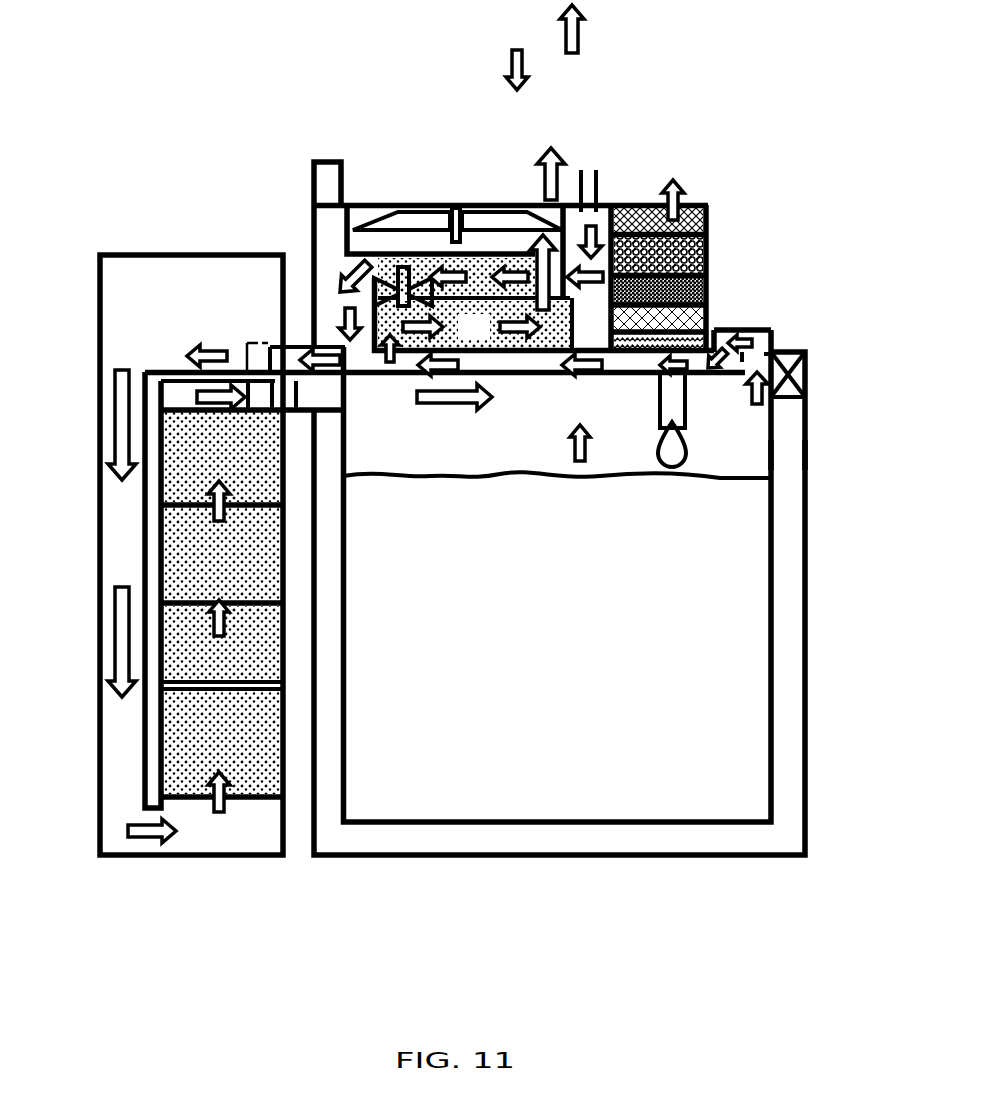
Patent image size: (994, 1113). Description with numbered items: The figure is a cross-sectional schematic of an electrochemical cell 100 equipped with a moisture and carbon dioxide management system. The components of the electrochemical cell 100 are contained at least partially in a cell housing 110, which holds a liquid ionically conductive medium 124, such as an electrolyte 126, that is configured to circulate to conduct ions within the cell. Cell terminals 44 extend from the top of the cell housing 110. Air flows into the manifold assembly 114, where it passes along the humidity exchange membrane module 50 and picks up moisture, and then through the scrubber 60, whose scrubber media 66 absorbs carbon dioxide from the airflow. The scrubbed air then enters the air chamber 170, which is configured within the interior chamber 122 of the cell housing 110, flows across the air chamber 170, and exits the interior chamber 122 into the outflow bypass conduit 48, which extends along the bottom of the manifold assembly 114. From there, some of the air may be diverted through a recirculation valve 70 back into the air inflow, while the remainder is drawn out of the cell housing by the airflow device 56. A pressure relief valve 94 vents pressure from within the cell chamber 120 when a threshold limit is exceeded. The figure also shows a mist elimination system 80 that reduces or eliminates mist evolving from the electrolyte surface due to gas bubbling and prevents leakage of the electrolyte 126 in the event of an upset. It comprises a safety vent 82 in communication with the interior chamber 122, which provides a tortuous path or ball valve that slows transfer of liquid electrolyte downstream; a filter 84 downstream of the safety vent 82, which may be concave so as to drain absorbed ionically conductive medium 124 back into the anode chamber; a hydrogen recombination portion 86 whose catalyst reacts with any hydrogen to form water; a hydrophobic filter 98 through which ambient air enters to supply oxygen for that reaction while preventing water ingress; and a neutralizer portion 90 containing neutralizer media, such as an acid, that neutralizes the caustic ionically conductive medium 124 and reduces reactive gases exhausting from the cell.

The electrochemical cell 100 is at (228, 148).
The scrubber 60 is at (107, 248).
The scrubber media 66 is at (229, 463).
The cell terminals 44 is at (326, 186).
The manifold assembly 114 is at (464, 196).
The recirculation valve 70 is at (404, 267).
The airflow device 56 is at (517, 205).
The humidity exchange membrane module 50 is at (485, 338).
The mist elimination system 80 is at (716, 178).
The hydrophobic filter 98 is at (646, 205).
The neutralizer portion 90 is at (708, 253).
The hydrogen recombination portion 86 is at (708, 279).
The filter 84 is at (708, 305).
The safety vent 82 is at (735, 330).
The pressure relief valve 94 is at (806, 383).
The cell housing 110 is at (806, 500).
The cell chamber 120 is at (752, 452).
The interior chamber 122 is at (543, 468).
The liquid ionically conductive medium 124 is at (612, 550).
The electrolyte 126 is at (537, 550).
The air chamber 170 is at (440, 460).
The outflow bypass conduit 48 is at (627, 377).